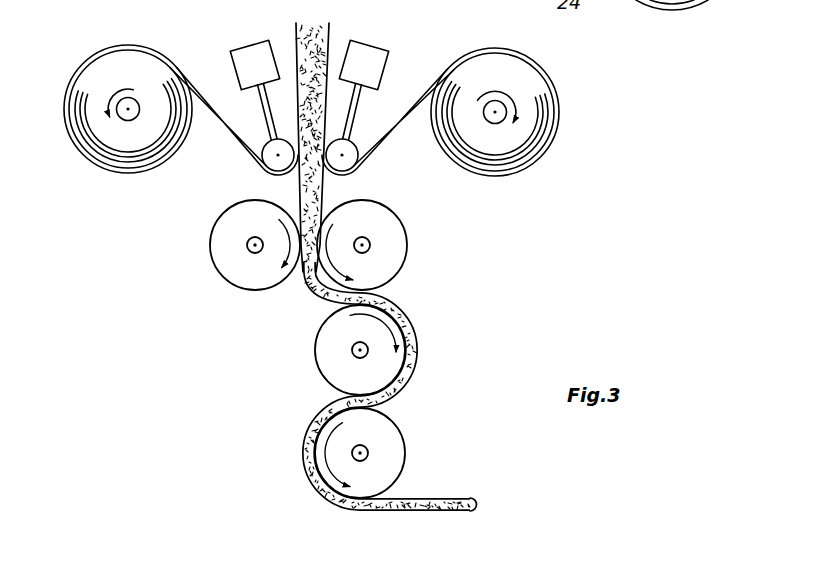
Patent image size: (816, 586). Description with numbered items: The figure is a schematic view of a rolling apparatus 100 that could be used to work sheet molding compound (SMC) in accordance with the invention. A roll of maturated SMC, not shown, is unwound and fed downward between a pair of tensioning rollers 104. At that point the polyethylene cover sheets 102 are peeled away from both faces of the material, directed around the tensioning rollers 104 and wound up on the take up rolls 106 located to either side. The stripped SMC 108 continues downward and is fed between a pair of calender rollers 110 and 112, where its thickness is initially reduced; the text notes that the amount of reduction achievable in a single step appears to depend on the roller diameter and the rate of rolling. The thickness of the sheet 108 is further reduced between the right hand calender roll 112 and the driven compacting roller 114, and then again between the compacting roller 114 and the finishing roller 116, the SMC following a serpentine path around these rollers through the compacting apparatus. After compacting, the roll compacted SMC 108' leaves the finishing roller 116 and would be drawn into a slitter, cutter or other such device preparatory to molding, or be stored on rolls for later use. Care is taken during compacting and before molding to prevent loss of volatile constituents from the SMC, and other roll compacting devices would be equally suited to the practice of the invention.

The rolling apparatus 100 is at (200, 264).
The polyethylene cover sheets 102 is at (200, 94).
The tensioning rollers 104 is at (260, 146).
The take up rolls 106 is at (126, 116).
The stripped SMC 108 is at (312, 265).
The roll compacted SMC 108' is at (447, 490).
The calender roller 110 is at (257, 283).
The calender roller 112 is at (393, 258).
The driven compacting roller 114 is at (332, 366).
The finishing roller 116 is at (389, 446).